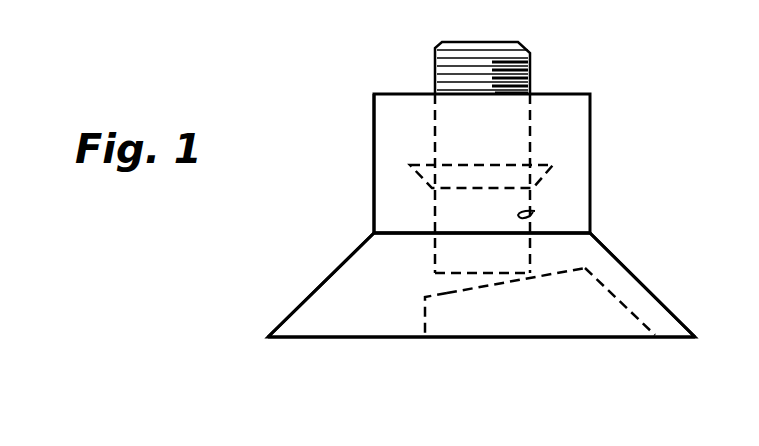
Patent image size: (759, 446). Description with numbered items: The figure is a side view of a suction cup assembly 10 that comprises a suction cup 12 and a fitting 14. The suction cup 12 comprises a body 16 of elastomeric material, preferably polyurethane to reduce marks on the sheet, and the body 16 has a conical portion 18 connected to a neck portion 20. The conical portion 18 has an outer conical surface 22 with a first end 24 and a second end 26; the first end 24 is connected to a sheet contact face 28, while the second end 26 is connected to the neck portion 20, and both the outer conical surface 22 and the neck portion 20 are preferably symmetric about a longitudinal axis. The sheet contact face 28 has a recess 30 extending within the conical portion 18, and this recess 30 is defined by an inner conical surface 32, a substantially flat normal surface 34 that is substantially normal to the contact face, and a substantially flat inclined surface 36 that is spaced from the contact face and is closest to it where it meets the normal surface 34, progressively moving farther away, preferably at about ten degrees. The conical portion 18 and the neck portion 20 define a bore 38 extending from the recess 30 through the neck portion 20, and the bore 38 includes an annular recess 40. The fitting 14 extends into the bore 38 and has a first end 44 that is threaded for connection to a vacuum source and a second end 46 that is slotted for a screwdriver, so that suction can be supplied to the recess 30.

The suction cup assembly 10 is at (672, 118).
The suction cup 12 is at (590, 172).
The fitting 14 is at (530, 70).
The body 16 is at (296, 163).
The conical portion 18 is at (318, 287).
The neck portion 20 is at (374, 133).
The outer conical surface 22 is at (641, 283).
The first end 24 is at (266, 337).
The second end 26 is at (374, 233).
The sheet contact face 28 is at (355, 340).
The recess 30 is at (550, 362).
The inner conical surface 32 is at (640, 305).
The normal surface 34 is at (428, 318).
The inclined surface 36 is at (563, 273).
The bore 38 is at (535, 211).
The annular recess 40 is at (540, 176).
The first end 44 is at (435, 70).
The second end 46 is at (472, 278).